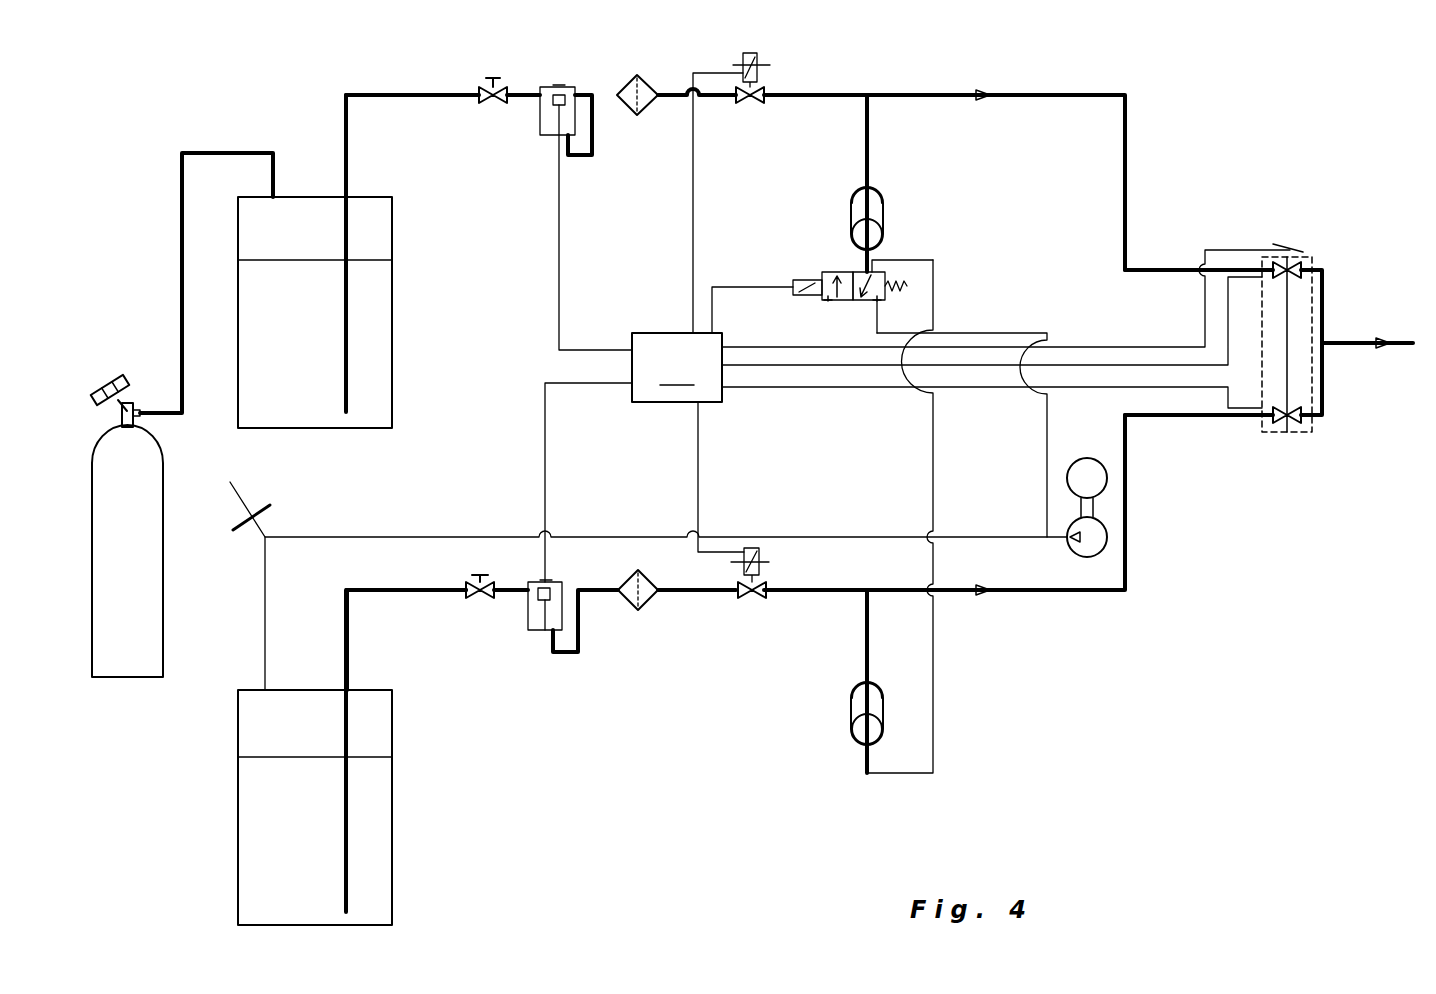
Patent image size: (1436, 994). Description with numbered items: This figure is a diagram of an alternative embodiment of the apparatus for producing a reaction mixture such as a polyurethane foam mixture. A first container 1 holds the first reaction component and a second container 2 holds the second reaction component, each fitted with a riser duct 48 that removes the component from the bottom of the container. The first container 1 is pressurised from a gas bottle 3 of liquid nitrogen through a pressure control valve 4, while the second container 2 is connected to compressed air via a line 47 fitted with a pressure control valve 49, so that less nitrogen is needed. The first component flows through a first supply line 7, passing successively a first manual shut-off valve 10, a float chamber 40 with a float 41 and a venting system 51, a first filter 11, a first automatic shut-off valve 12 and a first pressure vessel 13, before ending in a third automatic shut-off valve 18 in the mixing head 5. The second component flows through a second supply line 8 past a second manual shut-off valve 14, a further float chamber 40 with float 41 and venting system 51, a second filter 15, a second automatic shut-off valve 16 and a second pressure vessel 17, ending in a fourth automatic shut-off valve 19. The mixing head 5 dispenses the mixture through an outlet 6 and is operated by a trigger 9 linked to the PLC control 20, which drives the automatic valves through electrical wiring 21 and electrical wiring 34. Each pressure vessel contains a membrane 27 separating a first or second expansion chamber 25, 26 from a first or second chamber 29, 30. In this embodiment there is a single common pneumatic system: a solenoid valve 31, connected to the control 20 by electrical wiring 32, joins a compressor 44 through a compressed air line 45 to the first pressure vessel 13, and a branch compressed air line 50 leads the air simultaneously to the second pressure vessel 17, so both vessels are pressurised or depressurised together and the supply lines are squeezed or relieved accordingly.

The first container 1 is at (392, 297).
The second container 2 is at (392, 820).
The gas bottle 3 is at (145, 570).
The pressure control valve 4 is at (107, 392).
The mixing head 5 is at (1325, 298).
The outlet 6 is at (1398, 345).
The first supply line 7 is at (442, 93).
The second supply line 8 is at (440, 590).
The trigger 9 is at (1293, 252).
The first manual shut-off valve 10 is at (492, 82).
The first filter 11 is at (637, 75).
The first automatic shut-off valve 12 is at (745, 90).
The first pressure vessel 13 is at (883, 213).
The second manual shut-off valve 14 is at (490, 598).
The second filter 15 is at (633, 617).
The second automatic shut-off valve 16 is at (747, 600).
The second pressure vessel 17 is at (883, 708).
The third automatic shut-off valve 18 is at (1300, 268).
The fourth automatic shut-off valve 19 is at (1283, 420).
The PLC control 20 is at (677, 367).
The electrical wiring 21 is at (742, 460).
The first expansion chamber 25 is at (882, 200).
The second expansion chamber 26 is at (877, 698).
The membrane 27 is at (842, 743).
The first chamber 29 is at (878, 233).
The second chamber 30 is at (875, 733).
The first solenoid valve 31 is at (848, 300).
The electrical wiring 32 is at (752, 287).
The electrical wiring 34 is at (847, 347).
The float chamber 40 is at (535, 630).
The float 41 is at (548, 594).
The compressor 44 is at (1107, 533).
The compressed air line 45 is at (980, 330).
The compressed air line 47 is at (590, 537).
The riser duct 48 is at (423, 907).
The pressure control valve 49 is at (231, 578).
The compressed air line 50 is at (933, 467).
The venting system 51 is at (529, 577).